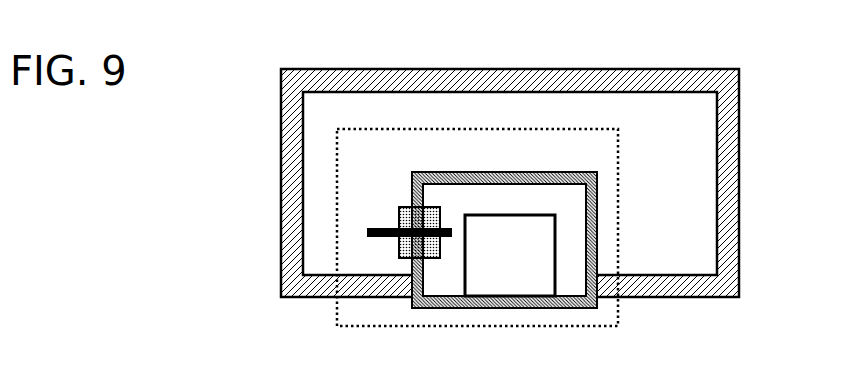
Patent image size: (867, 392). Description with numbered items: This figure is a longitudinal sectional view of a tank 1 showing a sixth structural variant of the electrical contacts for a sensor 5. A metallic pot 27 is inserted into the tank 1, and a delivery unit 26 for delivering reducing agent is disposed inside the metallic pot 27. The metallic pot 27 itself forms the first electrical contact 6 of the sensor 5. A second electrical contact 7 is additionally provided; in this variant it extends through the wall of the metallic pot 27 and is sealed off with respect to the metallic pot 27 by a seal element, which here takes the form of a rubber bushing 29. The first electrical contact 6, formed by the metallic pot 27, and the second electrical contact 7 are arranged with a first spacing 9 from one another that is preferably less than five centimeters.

The tank 1 is at (748, 78).
The sensor 5 is at (620, 185).
The first electrical contact 6 is at (596, 171).
The second electrical contact 7 is at (368, 230).
The first spacing 9 is at (406, 180).
The delivery unit 26 is at (488, 262).
The metallic pot 27 is at (600, 240).
The rubber bushing 29 is at (400, 244).